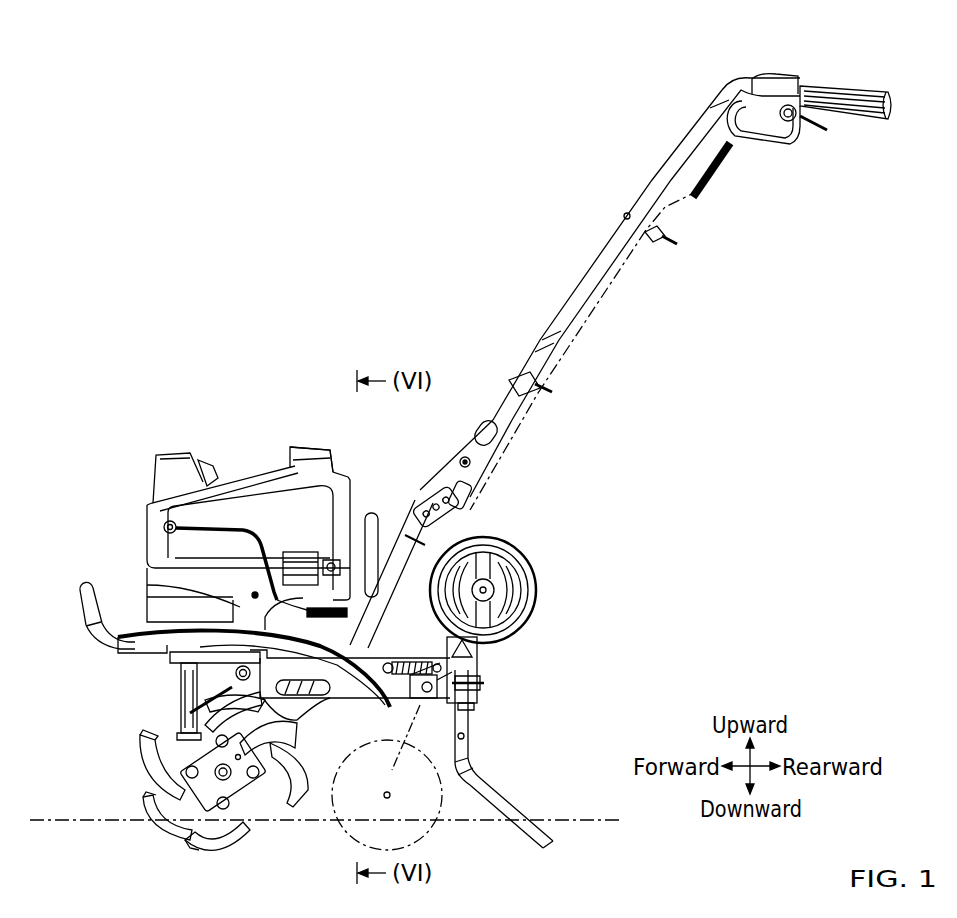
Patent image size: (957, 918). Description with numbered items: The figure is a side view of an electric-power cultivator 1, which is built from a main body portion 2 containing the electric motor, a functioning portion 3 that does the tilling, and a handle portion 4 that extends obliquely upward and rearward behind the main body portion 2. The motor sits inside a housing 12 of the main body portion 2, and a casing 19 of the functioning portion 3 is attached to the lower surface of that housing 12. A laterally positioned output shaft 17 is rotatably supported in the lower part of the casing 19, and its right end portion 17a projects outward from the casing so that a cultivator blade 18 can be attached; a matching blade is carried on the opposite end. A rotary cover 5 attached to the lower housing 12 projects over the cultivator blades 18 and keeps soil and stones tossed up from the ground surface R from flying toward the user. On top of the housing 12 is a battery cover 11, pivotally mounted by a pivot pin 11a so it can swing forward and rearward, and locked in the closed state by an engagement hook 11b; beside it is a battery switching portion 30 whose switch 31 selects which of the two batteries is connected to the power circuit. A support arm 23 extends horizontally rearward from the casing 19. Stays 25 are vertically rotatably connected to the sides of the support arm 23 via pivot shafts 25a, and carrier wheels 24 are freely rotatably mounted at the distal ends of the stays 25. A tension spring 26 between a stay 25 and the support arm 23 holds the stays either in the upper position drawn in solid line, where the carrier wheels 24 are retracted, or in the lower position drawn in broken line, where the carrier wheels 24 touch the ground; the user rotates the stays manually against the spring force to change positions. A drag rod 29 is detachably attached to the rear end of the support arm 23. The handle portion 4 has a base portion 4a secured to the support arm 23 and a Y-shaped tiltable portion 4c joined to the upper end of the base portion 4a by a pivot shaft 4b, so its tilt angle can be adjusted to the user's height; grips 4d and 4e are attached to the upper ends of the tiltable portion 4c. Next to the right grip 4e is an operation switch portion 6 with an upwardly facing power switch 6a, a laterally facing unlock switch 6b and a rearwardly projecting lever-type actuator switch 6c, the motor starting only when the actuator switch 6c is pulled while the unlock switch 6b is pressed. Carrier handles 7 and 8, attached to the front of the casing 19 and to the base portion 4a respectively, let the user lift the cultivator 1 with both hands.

The electric-power cultivator 1 is at (243, 298).
The main body portion 2 is at (270, 504).
The functioning portion 3 is at (199, 788).
The handle portion 4 is at (575, 363).
The base portion 4a is at (434, 527).
The pivot shaft 4b is at (462, 456).
The tiltable portion 4c is at (584, 318).
The grip 4d is at (868, 80).
The grip 4e is at (834, 97).
The rotary cover 5 is at (372, 650).
The operation switch portion 6 is at (786, 119).
The power switch 6a is at (780, 80).
The unlock switch 6b is at (790, 122).
The actuator switch 6c is at (826, 128).
The carrier handle 7 is at (78, 606).
The carrier handle 8 is at (372, 512).
The battery cover 11 is at (299, 512).
The pivot pin 11a is at (163, 525).
The engagement hook 11b is at (305, 550).
The housing 12 is at (187, 587).
The output shaft 17 is at (255, 808).
The right end portion 17a is at (228, 782).
The cultivator blade 18 is at (195, 797).
The casing 19 is at (180, 732).
The support arm 23 is at (343, 697).
The carrier wheel 24 is at (527, 557).
The stay 25 is at (463, 653).
The pivot shaft 25a is at (470, 709).
The tension spring 26 is at (503, 648).
The drag rod 29 is at (506, 800).
The battery switching portion 30 is at (175, 440).
The switch 31 is at (212, 456).
The ground surface R is at (74, 819).